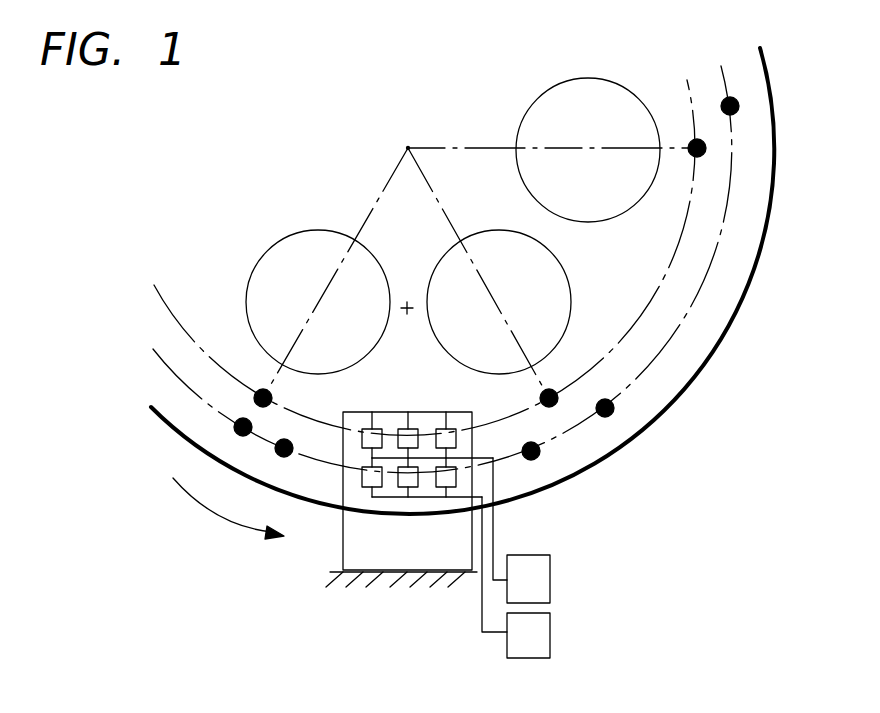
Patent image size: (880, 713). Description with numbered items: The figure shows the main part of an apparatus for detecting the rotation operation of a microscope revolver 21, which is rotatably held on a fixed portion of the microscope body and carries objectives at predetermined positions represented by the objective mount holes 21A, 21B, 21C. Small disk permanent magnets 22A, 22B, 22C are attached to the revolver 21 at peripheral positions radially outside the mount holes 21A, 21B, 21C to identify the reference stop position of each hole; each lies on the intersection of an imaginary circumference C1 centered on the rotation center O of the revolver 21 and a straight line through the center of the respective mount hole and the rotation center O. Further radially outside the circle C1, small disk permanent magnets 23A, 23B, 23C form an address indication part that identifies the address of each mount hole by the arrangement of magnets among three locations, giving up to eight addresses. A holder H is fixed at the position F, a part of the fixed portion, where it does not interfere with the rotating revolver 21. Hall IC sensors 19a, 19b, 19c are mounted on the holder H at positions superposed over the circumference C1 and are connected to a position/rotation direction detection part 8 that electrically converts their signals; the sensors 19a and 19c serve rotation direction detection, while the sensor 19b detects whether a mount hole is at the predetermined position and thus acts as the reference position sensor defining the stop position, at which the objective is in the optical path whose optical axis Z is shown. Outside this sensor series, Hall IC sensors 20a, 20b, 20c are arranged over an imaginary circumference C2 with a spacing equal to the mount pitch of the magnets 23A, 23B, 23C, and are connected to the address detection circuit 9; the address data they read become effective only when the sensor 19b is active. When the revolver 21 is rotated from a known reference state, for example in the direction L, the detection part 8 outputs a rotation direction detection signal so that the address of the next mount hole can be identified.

The revolver 21 is at (632, 280).
The objective mount hole 21A is at (306, 230).
The objective mount hole 21B is at (481, 230).
The objective mount hole 21C is at (590, 78).
The small disk permanent magnet 22A is at (272, 398).
The small disk permanent magnet 22B is at (540, 398).
The small disk permanent magnet 22C is at (690, 141).
The small disk permanent magnet (address indication part) 23A is at (276, 447).
The small disk permanent magnet (address indication part) 23B is at (538, 456).
The small disk permanent magnet (address indication part) 23C is at (733, 98).
The Hall IC sensor 19a is at (372, 412).
The Hall IC sensor 19b is at (408, 412).
The Hall IC sensor 19c is at (446, 412).
The Hall IC sensor 20a is at (366, 487).
The Hall IC sensor 20b is at (404, 497).
The Hall IC sensor 20c is at (444, 487).
The position/rotation direction detection part 8 is at (551, 563).
The address detection circuit 9 is at (551, 628).
The holder H is at (342, 556).
The position (part of fixed portion) F is at (401, 594).
The rotation direction L is at (190, 490).
The rotation center O is at (408, 148).
The optical axis Z is at (407, 304).
The imaginary circumference C1 is at (622, 340).
The imaginary circumference C2 is at (635, 387).